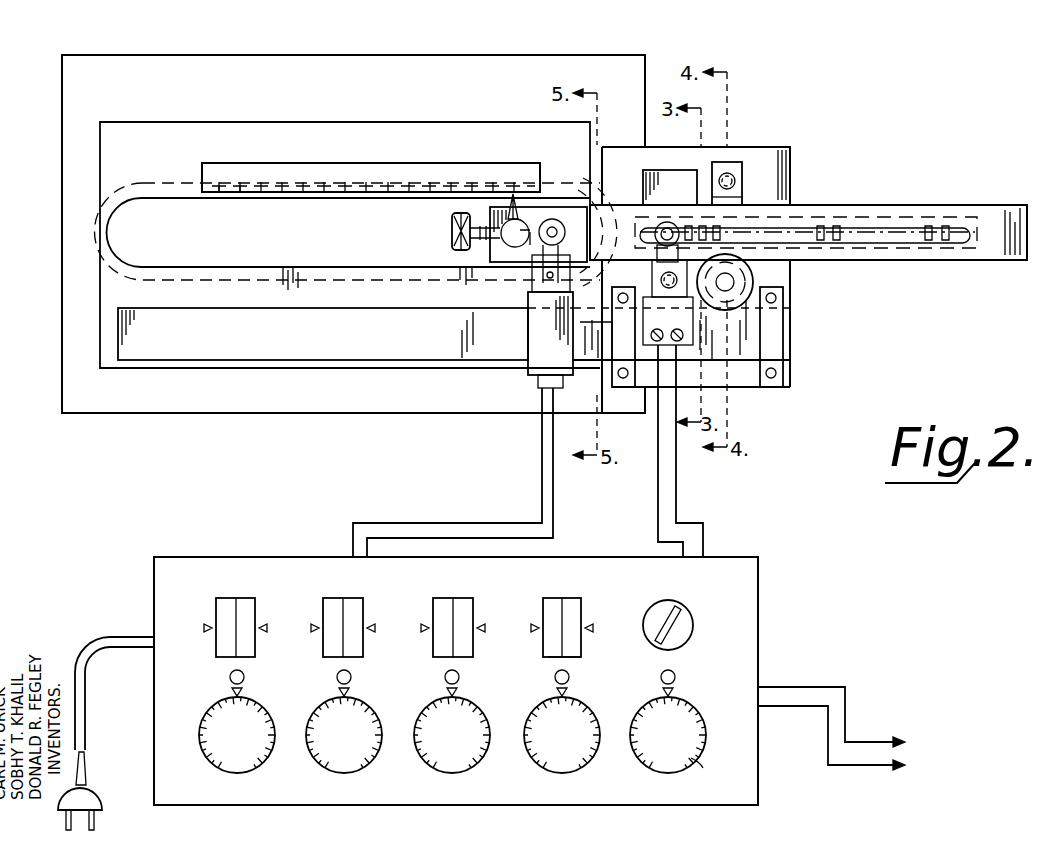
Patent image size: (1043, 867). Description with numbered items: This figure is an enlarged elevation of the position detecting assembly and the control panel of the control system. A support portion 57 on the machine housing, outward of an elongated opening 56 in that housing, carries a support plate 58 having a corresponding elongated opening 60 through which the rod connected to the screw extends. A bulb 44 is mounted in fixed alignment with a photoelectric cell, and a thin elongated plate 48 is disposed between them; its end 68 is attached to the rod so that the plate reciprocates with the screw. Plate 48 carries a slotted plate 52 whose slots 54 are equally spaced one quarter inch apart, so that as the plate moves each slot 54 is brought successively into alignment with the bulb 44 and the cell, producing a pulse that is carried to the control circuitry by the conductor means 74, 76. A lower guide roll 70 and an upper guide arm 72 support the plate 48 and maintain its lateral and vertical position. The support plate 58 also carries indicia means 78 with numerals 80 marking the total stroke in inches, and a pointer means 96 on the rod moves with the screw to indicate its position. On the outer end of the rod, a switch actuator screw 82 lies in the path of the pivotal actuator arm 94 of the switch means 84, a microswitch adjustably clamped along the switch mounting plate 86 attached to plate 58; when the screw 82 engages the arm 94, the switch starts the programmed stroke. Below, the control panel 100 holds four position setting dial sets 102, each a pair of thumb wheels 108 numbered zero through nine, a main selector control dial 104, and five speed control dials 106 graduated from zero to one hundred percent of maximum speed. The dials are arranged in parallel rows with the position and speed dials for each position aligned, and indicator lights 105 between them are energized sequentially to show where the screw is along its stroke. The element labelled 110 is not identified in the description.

The bulb 44 is at (688, 195).
The elongated plate 48 is at (1015, 208).
The slotted plate 52 is at (872, 213).
The slots 54 is at (928, 243).
The elongated opening 56 is at (95, 236).
The support portion 57 is at (278, 68).
The support plate 58 is at (250, 135).
The elongated opening 60 is at (313, 197).
The end of plate 68 is at (536, 214).
The lower guide roll 70 is at (754, 278).
The upper guide arm 72 is at (745, 186).
The conductor means 74 is at (676, 502).
The conductor means 76 is at (658, 486).
The indicia means 78 is at (403, 148).
The numerals 80 is at (242, 195).
The switch actuator screw 82 is at (530, 252).
The switch means 84 is at (528, 328).
The switch mounting plate 86 is at (318, 348).
The pivotal actuator arm 94 is at (560, 229).
The pointer means 96 is at (522, 216).
The control panel 100 is at (154, 560).
The position setting dials 102 is at (216, 619).
The main selector control dial 104 is at (692, 633).
The indicator lights 105 is at (245, 678).
The speed control dials 106 is at (337, 775).
The thumb wheels 108 is at (572, 651).
The dial 110 is at (698, 758).